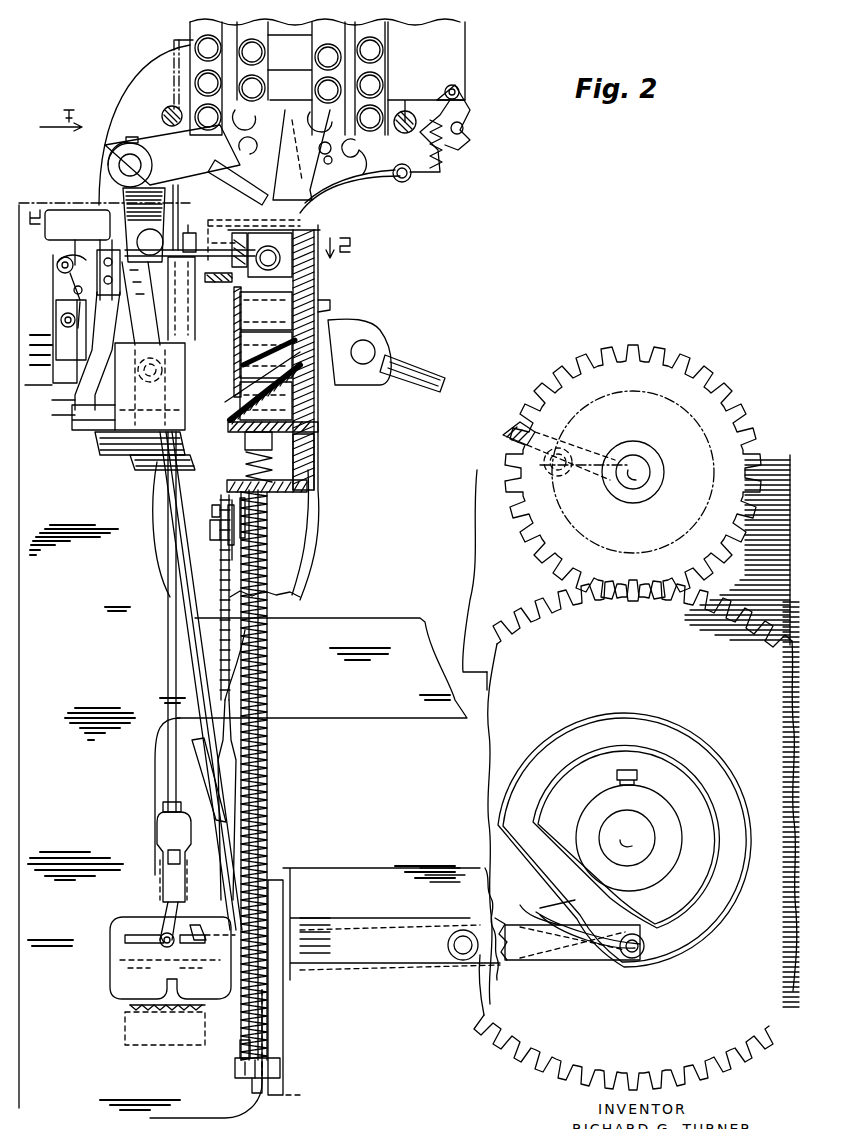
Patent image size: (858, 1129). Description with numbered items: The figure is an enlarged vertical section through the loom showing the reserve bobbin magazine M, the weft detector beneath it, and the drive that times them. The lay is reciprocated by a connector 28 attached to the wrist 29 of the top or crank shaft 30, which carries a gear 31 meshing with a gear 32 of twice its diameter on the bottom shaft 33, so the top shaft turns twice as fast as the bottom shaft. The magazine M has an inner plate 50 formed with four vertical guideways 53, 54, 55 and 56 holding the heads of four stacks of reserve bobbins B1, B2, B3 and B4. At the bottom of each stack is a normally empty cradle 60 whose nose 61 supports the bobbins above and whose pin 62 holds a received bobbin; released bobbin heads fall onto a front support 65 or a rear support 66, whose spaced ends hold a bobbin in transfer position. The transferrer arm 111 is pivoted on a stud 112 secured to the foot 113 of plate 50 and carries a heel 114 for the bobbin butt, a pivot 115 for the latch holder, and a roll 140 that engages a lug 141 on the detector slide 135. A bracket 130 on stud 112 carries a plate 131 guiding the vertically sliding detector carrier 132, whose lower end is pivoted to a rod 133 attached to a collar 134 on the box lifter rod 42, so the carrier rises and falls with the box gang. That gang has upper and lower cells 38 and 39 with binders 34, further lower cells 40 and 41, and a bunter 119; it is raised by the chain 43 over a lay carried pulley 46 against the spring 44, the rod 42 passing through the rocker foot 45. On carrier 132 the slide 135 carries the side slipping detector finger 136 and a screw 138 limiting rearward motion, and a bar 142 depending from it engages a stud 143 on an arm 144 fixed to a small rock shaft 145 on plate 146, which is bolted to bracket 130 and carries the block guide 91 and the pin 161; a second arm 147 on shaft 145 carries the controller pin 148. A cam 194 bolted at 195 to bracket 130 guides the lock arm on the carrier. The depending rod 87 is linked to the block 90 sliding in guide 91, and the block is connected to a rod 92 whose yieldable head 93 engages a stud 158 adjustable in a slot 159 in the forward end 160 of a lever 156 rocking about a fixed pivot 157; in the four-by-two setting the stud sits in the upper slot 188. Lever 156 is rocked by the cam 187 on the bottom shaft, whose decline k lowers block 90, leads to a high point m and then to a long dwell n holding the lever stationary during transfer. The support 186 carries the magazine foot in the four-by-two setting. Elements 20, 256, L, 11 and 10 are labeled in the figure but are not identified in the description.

The reserve bobbin magazine M is at (188, 34).
The vertical guideway 53 is at (182, 42).
The stack of reserve bobbins B1 is at (208, 48).
The inner plate 50 is at (185, 95).
The stack of reserve bobbins B2 is at (252, 61).
The vertical guideway 54 is at (268, 30).
The vertical guideway 55 is at (308, 45).
The stack of reserve bobbins B3 is at (328, 50).
The stack of reserve bobbins B4 is at (370, 78).
The vertical guideway 56 is at (388, 32).
The nose 61 is at (260, 130).
The cradle 60 is at (355, 150).
The pin 62 is at (351, 155).
The rear support 66 is at (342, 187).
The heel 114 is at (285, 143).
The transferrer arm 111 is at (156, 146).
The stud 112 is at (130, 165).
The bracket 130 is at (108, 164).
The depending rod 87 is at (163, 190).
The front support 65 is at (246, 192).
The pivot 115 is at (190, 231).
The roll 140 is at (150, 242).
The pin 161 is at (188, 217).
The block 90 is at (195, 233).
The horizontal slide 135 is at (234, 228).
The bar 142 is at (77, 224).
The screw 138 is at (72, 246).
The lug 141 is at (120, 240).
The foot 113 is at (64, 204).
The controller pin 148 is at (58, 262).
The second arm 147 is at (62, 272).
The stud 143 is at (72, 285).
The arm 144 is at (76, 297).
The rock shaft 145 is at (60, 320).
The magazine support 186 is at (61, 348).
The bolt 195 is at (97, 330).
The cam 194 is at (180, 288).
The block guide 91 is at (168, 305).
The plate 146 is at (83, 424).
The plate 131 is at (107, 446).
The detector carrier 132 is at (134, 454).
The detector finger 136 is at (212, 248).
The upper cell 38 is at (288, 278).
The lower cell 39 is at (288, 296).
The rod 20 is at (239, 300).
The bunter 119 is at (213, 278).
The binder 34 is at (239, 359).
The lower cell 40 is at (244, 372).
The inclined rod 256 is at (226, 422).
The lower cell 41 is at (288, 402).
The cylinder wall L is at (330, 314).
The connector 28 is at (438, 376).
The box lifter rod 42 is at (266, 738).
The spring 44 is at (268, 774).
The lay carried pulley 46 is at (210, 516).
The chain 43 is at (224, 572).
The housing 11 is at (305, 532).
The frame 10 is at (393, 598).
The rod 92 is at (167, 688).
The rod 133 is at (168, 516).
The yieldable head 93 is at (157, 840).
The stud 158 is at (164, 928).
The upper slot 188 is at (195, 932).
The forward end 160 is at (109, 940).
The slot 159 is at (136, 1014).
The collar 134 is at (239, 1086).
The rocker foot 45 is at (290, 894).
The fixed pivot 157 is at (466, 952).
The lever 156 is at (550, 958).
The decline k is at (546, 912).
The cam 187 is at (704, 937).
The gear 31 is at (728, 390).
The top shaft 30 is at (648, 471).
The wrist 29 is at (596, 445).
The gear 32 is at (512, 592).
The high point m is at (537, 734).
The dwell n is at (721, 767).
The bottom shaft 33 is at (640, 838).